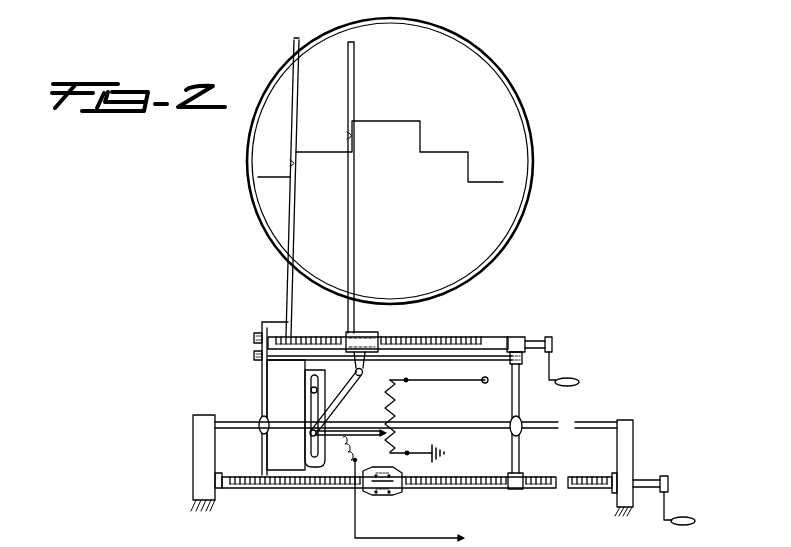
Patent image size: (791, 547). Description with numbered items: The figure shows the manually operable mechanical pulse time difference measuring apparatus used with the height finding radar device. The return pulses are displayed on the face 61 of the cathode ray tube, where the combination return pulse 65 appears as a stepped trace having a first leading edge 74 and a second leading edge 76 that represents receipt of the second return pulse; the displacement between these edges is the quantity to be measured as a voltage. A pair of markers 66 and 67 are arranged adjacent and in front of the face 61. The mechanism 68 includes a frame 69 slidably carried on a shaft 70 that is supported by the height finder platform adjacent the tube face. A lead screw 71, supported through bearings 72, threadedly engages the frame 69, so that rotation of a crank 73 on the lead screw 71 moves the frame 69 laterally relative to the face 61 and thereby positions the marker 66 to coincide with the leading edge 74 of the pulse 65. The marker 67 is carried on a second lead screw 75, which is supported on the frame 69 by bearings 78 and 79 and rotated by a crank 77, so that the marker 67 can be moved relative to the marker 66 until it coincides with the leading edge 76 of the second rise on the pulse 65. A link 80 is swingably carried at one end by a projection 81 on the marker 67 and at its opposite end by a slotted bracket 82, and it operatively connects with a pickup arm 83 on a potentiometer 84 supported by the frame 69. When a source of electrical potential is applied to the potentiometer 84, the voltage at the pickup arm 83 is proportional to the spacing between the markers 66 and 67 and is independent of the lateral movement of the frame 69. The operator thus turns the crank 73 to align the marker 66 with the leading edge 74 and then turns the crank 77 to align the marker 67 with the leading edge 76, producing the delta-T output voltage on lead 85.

The face of tube 61 is at (500, 100).
The combination return pulse 65 is at (393, 121).
The marker 66 is at (295, 232).
The marker 67 is at (354, 232).
The mechanism 68 is at (515, 337).
The frame 69 is at (259, 356).
The shaft 70 is at (233, 420).
The lead screw 71 is at (547, 489).
The bearings 72 is at (222, 489).
The crank 73 is at (675, 519).
The leading edge 74 is at (296, 162).
The second lead screw 75 is at (440, 343).
The leading edge 76 is at (350, 135).
The crank 77 is at (580, 383).
The bearing 78 is at (527, 343).
The bearing 79 is at (262, 331).
The link 80 is at (343, 388).
The projection 81 is at (357, 352).
The slotted bracket 82 is at (312, 390).
The pickup arm 83 is at (345, 438).
The potentiometer 84 is at (390, 412).
The output lead 85 is at (437, 538).